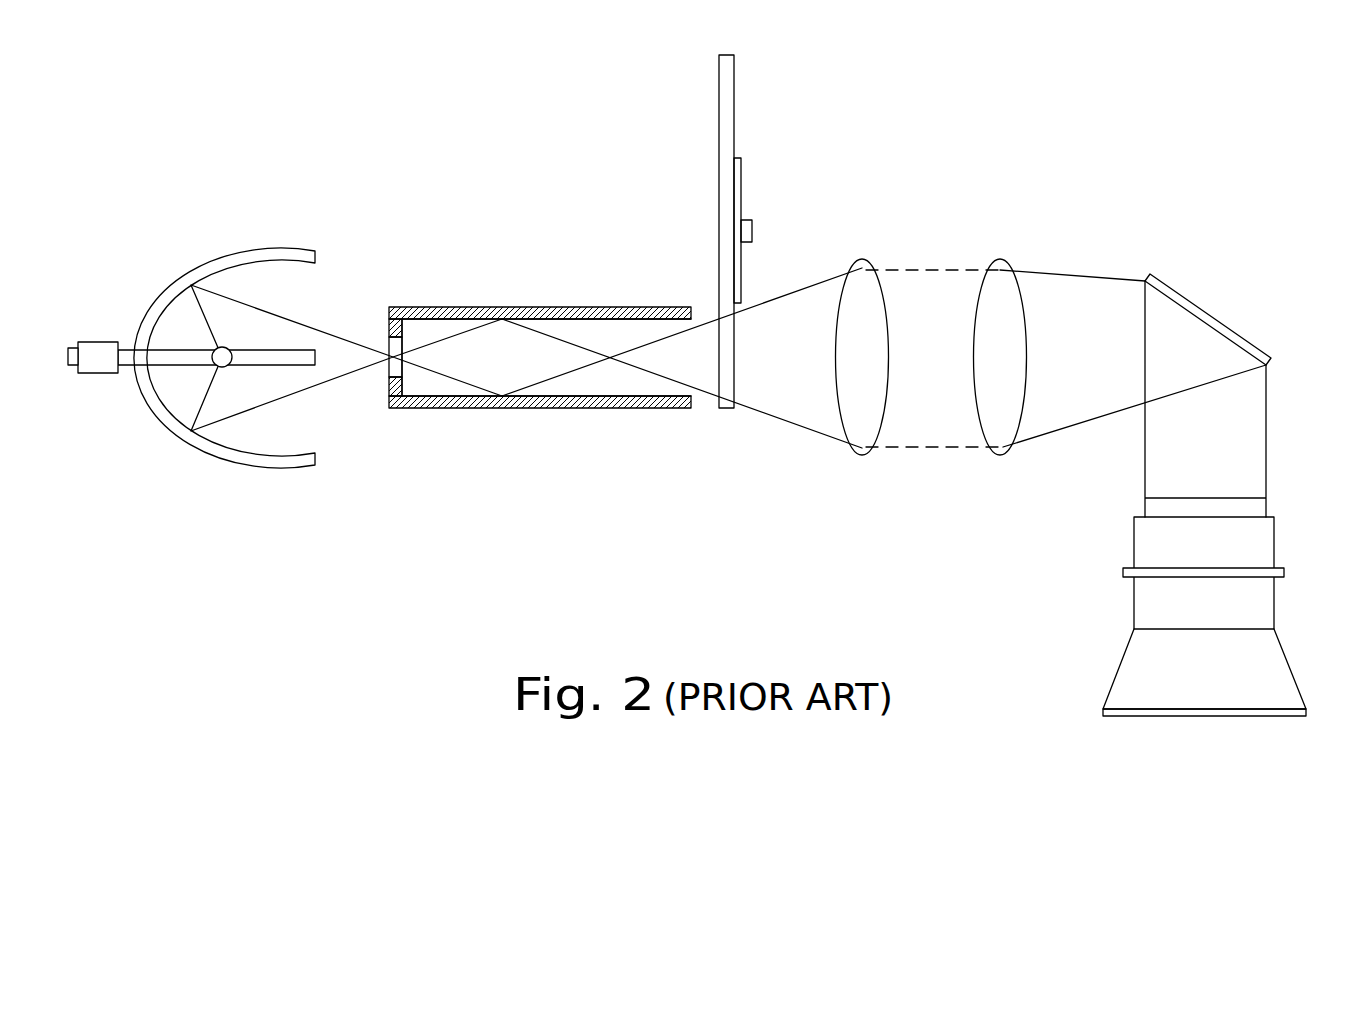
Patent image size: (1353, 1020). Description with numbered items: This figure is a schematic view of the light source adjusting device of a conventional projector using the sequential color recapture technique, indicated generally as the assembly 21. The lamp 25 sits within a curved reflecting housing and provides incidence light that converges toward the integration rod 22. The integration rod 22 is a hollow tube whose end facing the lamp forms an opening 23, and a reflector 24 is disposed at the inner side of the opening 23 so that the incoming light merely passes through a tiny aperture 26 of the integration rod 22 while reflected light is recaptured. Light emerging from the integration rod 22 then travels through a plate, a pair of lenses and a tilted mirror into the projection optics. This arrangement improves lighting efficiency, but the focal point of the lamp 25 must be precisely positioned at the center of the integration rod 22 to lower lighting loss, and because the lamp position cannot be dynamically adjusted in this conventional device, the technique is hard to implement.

The light source unit 21 is at (246, 207).
The integration rod 22 is at (551, 410).
The opening 23 is at (417, 384).
The reflector 24 is at (508, 318).
The lamp 25 is at (261, 464).
The aperture 26 is at (392, 348).